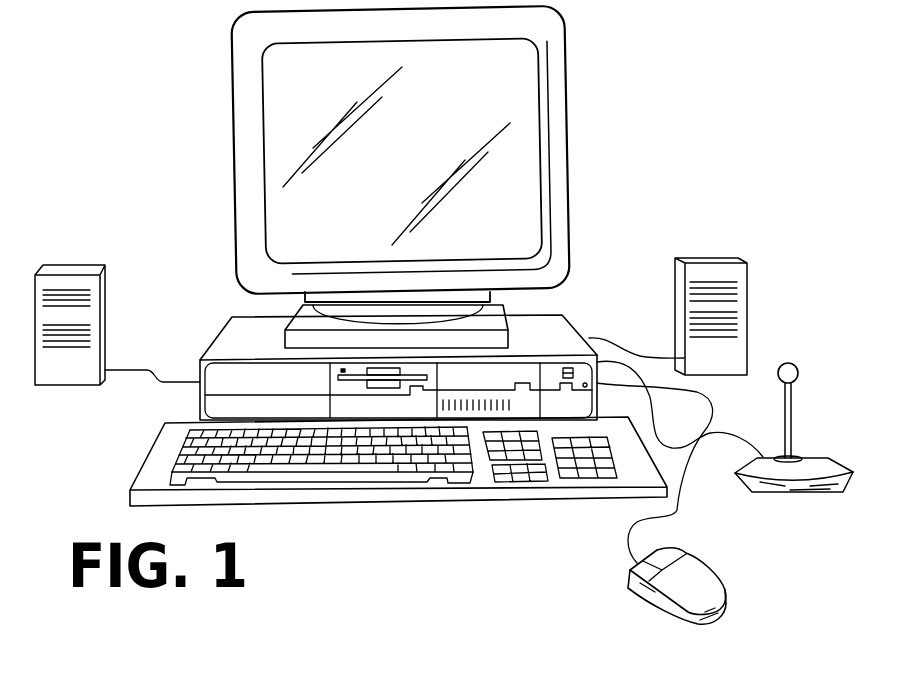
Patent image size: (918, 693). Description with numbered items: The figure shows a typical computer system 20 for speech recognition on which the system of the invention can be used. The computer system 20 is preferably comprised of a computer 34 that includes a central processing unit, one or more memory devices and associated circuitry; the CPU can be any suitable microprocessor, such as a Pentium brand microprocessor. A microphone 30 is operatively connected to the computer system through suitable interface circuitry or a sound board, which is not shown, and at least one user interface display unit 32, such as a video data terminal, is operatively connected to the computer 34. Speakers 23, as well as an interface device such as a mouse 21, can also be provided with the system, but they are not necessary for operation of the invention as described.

The computer system 20 is at (593, 210).
The mouse 21 is at (630, 568).
The speakers 23 is at (62, 265).
The microphone 30 is at (771, 492).
The user interface display unit 32 is at (232, 52).
The computer 34 is at (210, 348).